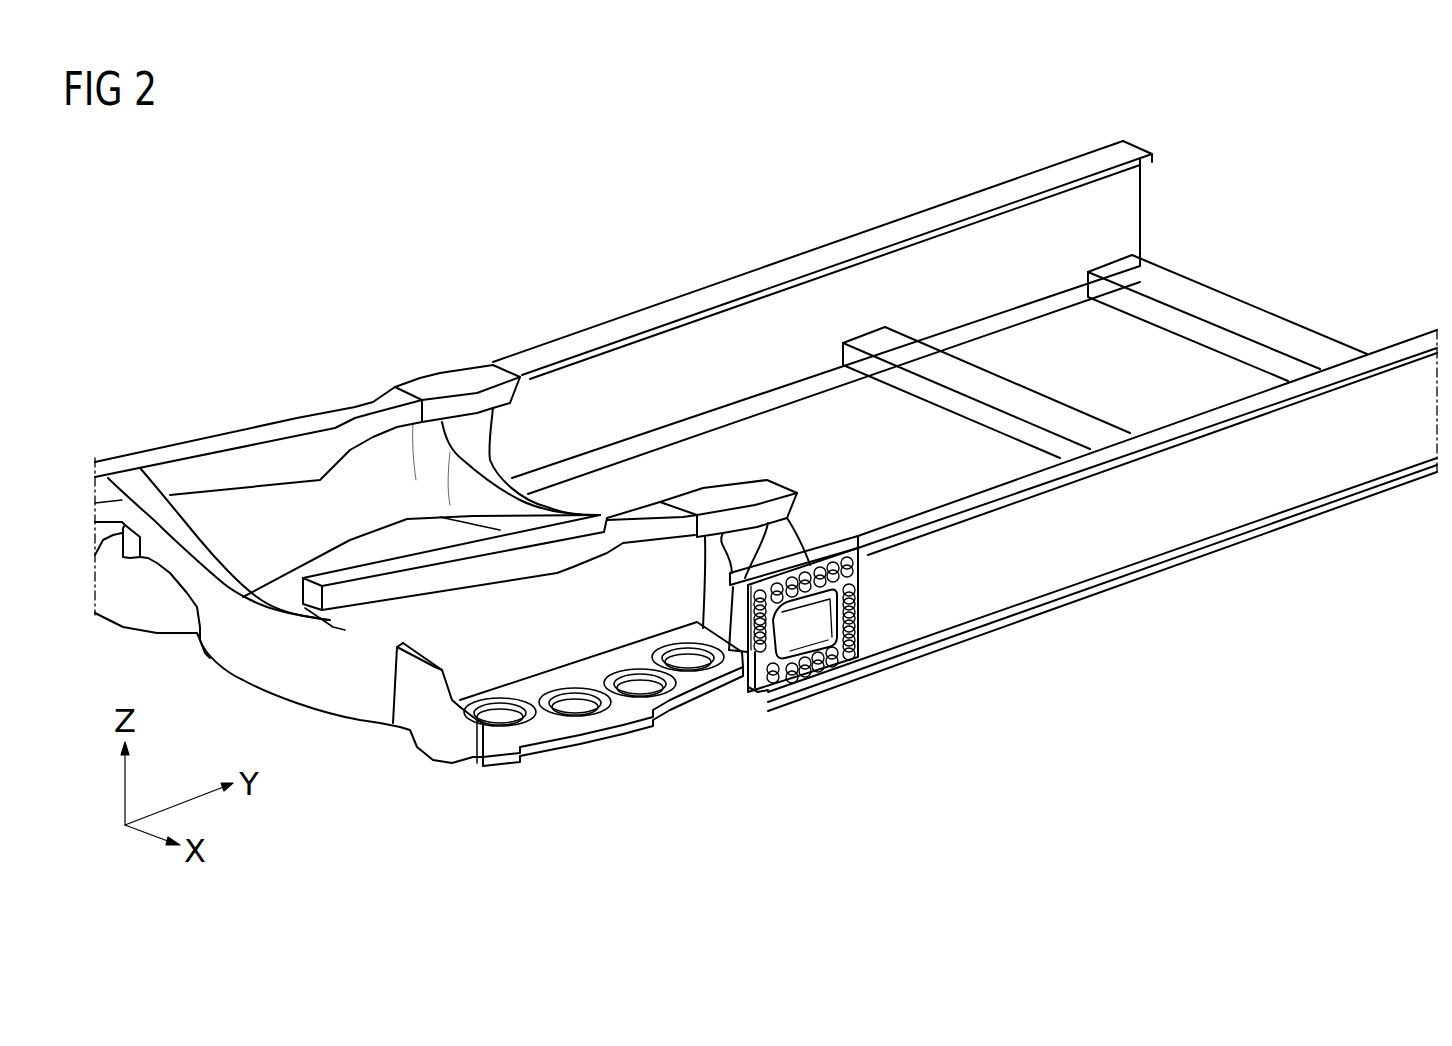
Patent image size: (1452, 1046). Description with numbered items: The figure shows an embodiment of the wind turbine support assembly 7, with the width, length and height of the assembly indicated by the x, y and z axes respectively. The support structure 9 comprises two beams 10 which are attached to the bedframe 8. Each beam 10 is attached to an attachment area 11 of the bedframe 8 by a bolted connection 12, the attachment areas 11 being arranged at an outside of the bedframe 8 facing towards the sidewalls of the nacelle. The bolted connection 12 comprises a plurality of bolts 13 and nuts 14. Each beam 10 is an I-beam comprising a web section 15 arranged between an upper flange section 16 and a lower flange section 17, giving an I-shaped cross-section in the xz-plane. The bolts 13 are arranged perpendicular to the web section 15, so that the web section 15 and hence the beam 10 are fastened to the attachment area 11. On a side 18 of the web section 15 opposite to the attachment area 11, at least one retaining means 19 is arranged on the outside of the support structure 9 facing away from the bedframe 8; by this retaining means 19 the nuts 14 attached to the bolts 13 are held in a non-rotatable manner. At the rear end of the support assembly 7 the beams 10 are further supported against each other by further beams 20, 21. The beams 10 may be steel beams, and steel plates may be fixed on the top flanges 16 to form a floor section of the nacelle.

The wind turbine support assembly 7 is at (1243, 176).
The bedframe 8 is at (370, 420).
The support structure 9 is at (900, 228).
The beam 10 is at (630, 322).
The attachment area 11 is at (798, 555).
The bolted connection 12 is at (775, 662).
The bolt 13 is at (727, 603).
The nut 14 is at (812, 673).
The web section 15 is at (1042, 573).
The upper flange section 16 is at (1158, 433).
The lower flange section 17 is at (1223, 517).
The side of the web section 18 is at (812, 622).
The retaining means 19 is at (777, 658).
The further beam 20 is at (1213, 303).
The further beam 21 is at (1072, 422).